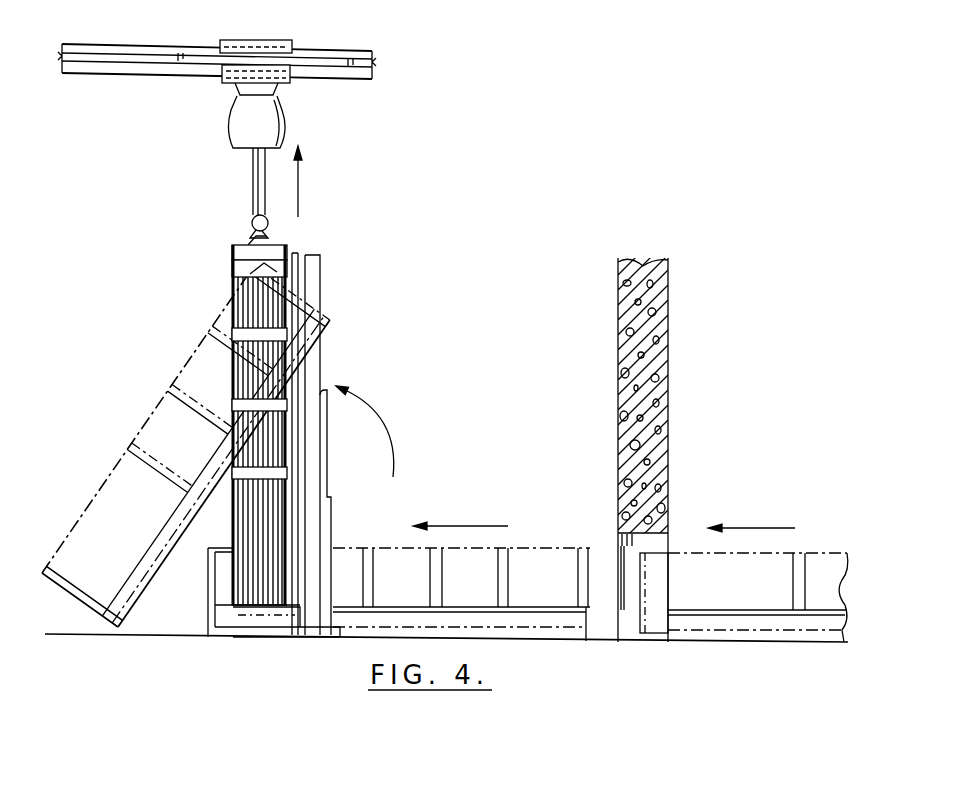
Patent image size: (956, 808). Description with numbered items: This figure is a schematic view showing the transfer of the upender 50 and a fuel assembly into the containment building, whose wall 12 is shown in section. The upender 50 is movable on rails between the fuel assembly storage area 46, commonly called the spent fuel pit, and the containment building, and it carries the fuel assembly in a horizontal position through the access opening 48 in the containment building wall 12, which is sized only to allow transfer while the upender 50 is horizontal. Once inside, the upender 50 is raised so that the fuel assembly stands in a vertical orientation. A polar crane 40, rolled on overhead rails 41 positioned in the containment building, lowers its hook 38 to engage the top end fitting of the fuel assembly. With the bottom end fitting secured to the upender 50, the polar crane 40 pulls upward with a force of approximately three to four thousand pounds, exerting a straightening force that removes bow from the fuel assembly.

The overhead rails 41 is at (167, 43).
The polar crane 40 is at (285, 42).
The hook 38 is at (250, 227).
The upender 50 is at (322, 373).
The containment building wall 12 is at (680, 380).
The access opening 48 is at (668, 537).
The fuel assembly storage area 46 is at (844, 538).